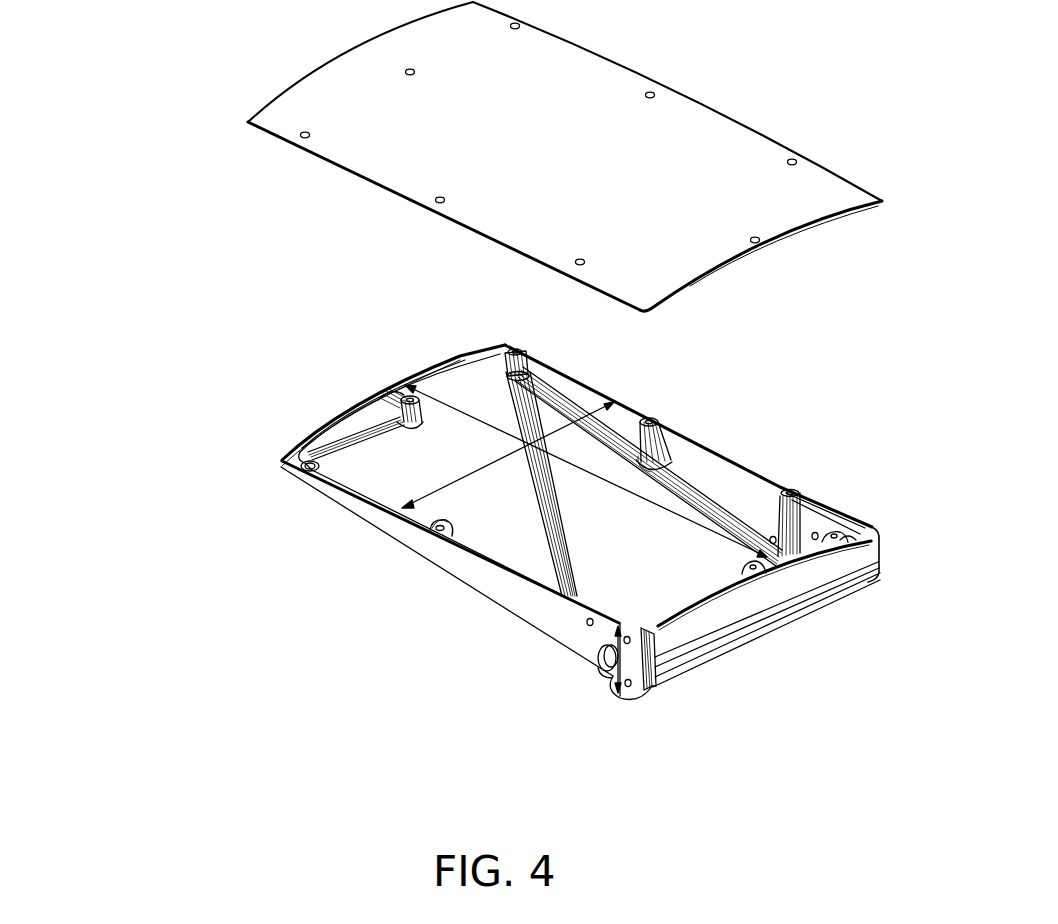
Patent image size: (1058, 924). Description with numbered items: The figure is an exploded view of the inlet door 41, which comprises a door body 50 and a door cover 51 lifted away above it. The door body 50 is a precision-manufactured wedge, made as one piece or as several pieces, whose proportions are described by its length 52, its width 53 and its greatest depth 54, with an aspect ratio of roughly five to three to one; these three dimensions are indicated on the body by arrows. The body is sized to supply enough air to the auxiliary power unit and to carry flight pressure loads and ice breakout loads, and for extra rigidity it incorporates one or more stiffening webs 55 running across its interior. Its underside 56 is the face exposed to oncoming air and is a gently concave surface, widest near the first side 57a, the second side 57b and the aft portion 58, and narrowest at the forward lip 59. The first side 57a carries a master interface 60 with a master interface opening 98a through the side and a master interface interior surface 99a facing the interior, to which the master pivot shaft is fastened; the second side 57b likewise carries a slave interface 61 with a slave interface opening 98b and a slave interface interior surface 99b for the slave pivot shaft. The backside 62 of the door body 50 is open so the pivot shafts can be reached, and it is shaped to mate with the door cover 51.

The inlet door 41 is at (176, 551).
The door body 50 is at (482, 592).
The door cover 51 is at (317, 90).
The length 52 is at (600, 478).
The width 53 is at (468, 478).
The greatest depth 54 is at (654, 686).
The stiffening web 55 is at (572, 530).
The underside 56 is at (386, 542).
The first side 57a is at (548, 632).
The second side 57b is at (698, 454).
The aft portion 58 is at (757, 598).
The forward lip 59 is at (357, 412).
The master interface 60 is at (611, 672).
The slave interface 61 is at (821, 524).
The backside 62 is at (505, 345).
The master interface opening 98a is at (602, 652).
The slave interface opening 98b is at (858, 540).
The master interface interior surface 99a is at (615, 626).
The slave interface interior surface 99b is at (836, 530).